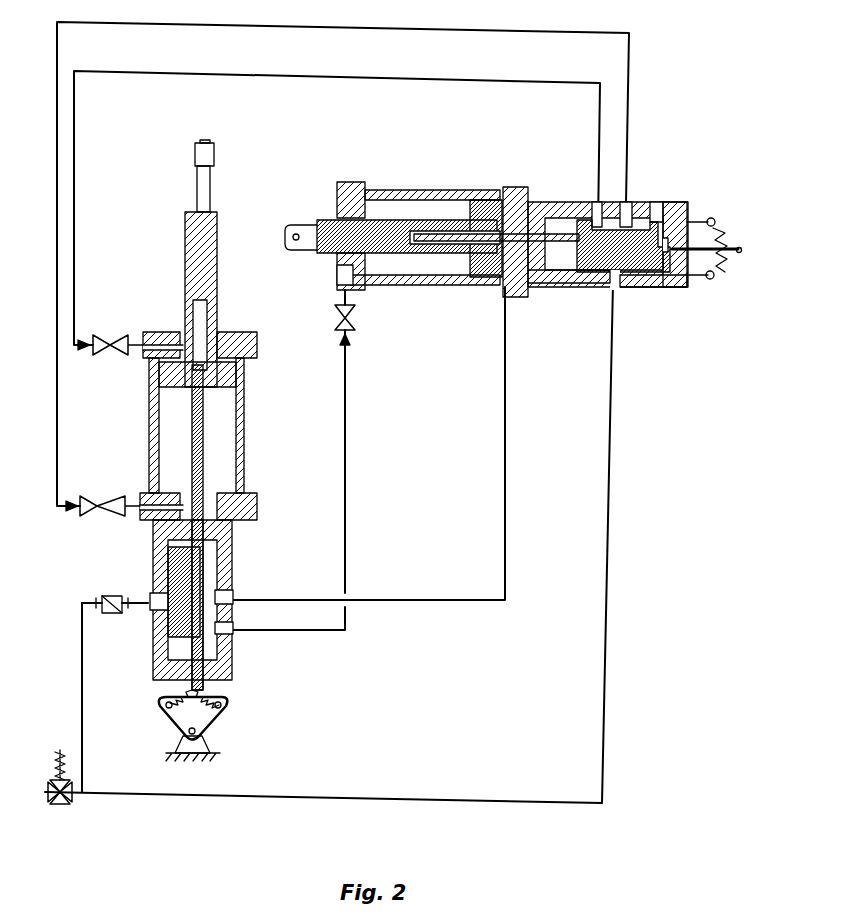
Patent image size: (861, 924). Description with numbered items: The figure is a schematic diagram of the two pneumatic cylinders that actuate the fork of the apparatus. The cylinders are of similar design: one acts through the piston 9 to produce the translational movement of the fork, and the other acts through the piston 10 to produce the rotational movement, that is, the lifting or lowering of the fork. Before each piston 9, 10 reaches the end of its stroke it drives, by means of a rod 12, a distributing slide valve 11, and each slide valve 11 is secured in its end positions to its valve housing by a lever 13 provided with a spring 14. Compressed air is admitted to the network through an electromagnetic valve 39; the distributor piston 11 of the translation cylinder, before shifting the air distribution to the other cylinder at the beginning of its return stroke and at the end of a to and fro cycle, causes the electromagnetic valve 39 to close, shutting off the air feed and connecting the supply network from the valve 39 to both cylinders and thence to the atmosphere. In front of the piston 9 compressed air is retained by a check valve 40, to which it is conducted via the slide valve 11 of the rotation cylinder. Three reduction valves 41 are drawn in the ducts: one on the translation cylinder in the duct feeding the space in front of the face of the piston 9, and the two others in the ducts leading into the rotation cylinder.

The piston 9 is at (478, 200).
The piston 10 is at (238, 375).
The distributing slide valve 11 is at (216, 556).
The rod 12 is at (204, 490).
The lever 13 is at (222, 698).
The spring 14 is at (172, 698).
The electromagnetic valve 39 is at (63, 800).
The check valve 40 is at (101, 596).
The reduction valve 41 is at (335, 313).